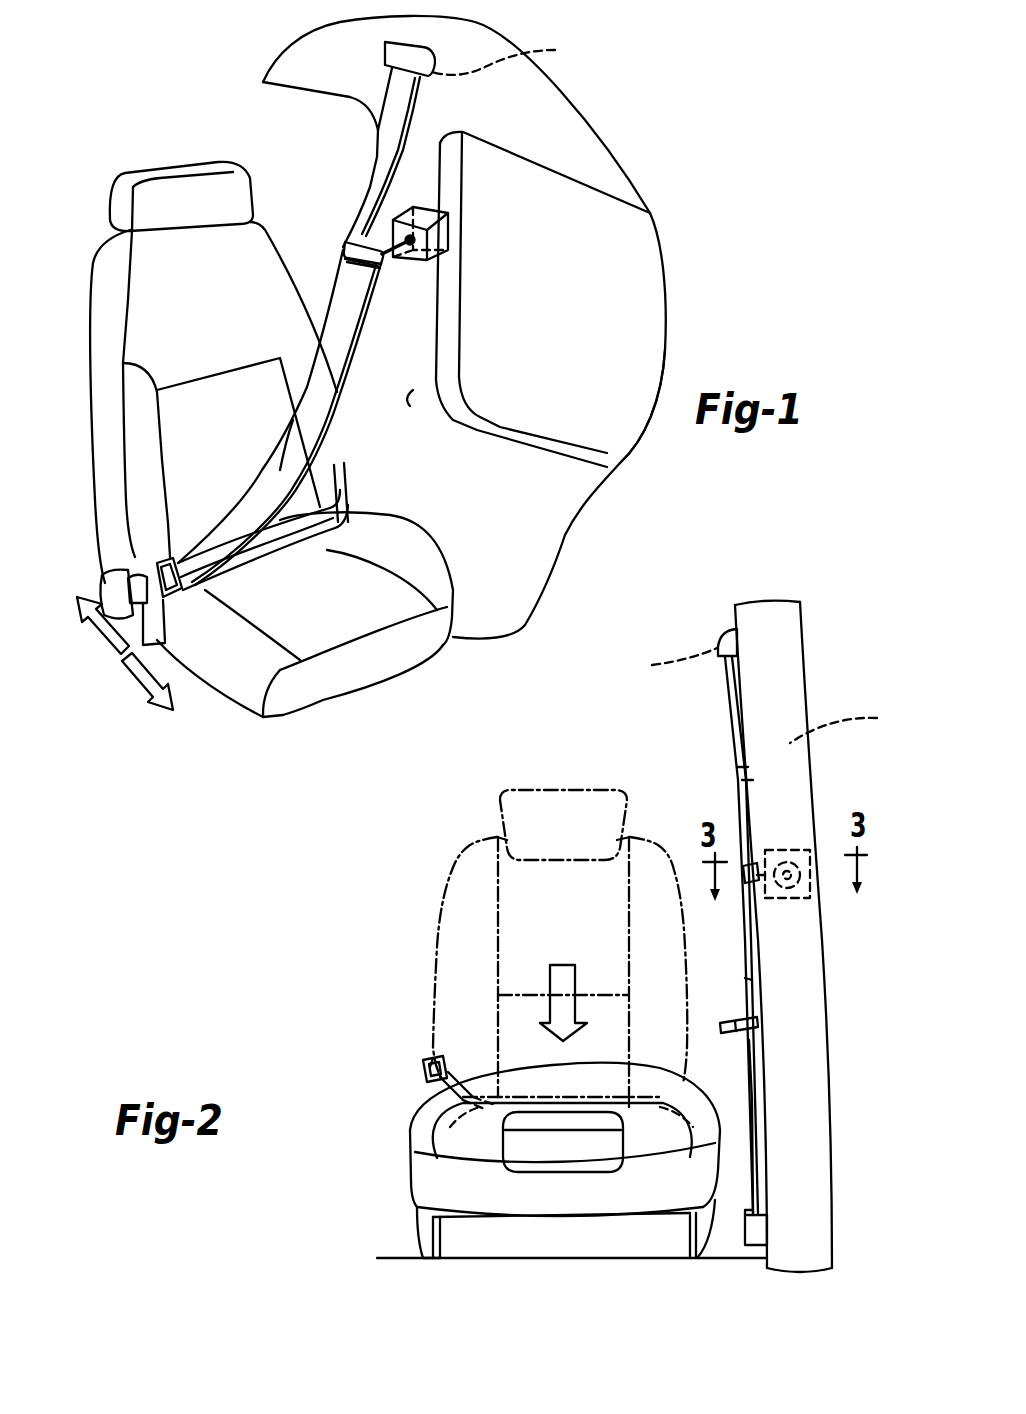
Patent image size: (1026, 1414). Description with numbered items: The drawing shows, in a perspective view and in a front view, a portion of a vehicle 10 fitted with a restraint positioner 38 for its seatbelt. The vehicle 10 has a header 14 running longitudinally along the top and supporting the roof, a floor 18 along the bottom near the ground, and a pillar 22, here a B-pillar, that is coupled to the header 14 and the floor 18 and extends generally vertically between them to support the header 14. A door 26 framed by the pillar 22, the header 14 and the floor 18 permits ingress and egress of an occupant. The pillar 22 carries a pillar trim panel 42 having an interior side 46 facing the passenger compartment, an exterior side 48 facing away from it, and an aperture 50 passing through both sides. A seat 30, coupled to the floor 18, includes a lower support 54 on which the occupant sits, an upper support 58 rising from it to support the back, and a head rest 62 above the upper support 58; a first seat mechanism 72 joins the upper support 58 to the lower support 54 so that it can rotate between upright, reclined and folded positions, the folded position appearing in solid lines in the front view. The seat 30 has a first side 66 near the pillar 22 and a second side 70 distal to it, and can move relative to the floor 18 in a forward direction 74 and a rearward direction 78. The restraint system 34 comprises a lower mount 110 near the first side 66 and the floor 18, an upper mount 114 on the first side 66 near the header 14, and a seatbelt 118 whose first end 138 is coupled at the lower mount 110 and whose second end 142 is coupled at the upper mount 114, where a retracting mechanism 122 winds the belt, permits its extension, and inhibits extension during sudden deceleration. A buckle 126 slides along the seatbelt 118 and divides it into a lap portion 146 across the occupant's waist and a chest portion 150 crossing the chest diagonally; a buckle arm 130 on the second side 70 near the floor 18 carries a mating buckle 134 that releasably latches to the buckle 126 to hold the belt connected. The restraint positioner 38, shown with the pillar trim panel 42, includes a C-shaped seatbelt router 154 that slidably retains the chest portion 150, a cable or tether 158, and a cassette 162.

In FIG. 1, the vehicle 10 is at (366, 127).
In FIG. 2, the vehicle 10 is at (475, 838).
In FIG. 1, the header 14 is at (434, 325).
In FIG. 2, the floor 18 is at (534, 1264).
In FIG. 1, the pillar 22 is at (521, 299).
In FIG. 2, the pillar 22 is at (799, 936).
In FIG. 1, the door 26 is at (614, 416).
In FIG. 1, the seat 30 is at (85, 406).
In FIG. 2, the seat 30 is at (536, 1135).
In FIG. 1, the restraint system 34 is at (293, 417).
In FIG. 2, the restraint system 34 is at (700, 959).
In FIG. 1, the restraint positioner 38 is at (336, 221).
In FIG. 2, the restraint positioner 38 is at (733, 921).
In FIG. 1, the pillar trim panel 42 is at (318, 306).
In FIG. 2, the pillar trim panel 42 is at (709, 751).
In FIG. 1, the interior side 46 is at (467, 389).
In FIG. 2, the interior side 46 is at (704, 797).
In FIG. 2, the exterior side 48 is at (845, 722).
In FIG. 1, the aperture 50 is at (369, 219).
In FIG. 1, the lower support 54 is at (387, 648).
In FIG. 2, the lower support 54 is at (523, 1173).
In FIG. 1, the upper support 58 is at (187, 389).
In FIG. 2, the upper support 58 is at (563, 982).
In FIG. 1, the head rest 62 is at (150, 196).
In FIG. 2, the head rest 62 is at (552, 998).
In FIG. 1, the first side 66 is at (387, 571).
In FIG. 2, the first side 66 is at (623, 1144).
In FIG. 1, the second side 70 is at (198, 700).
In FIG. 2, the second side 70 is at (512, 1220).
In FIG. 1, the first seat mechanism 72 is at (123, 549).
In FIG. 1, the forward direction 74 is at (124, 687).
In FIG. 1, the rearward direction 78 is at (78, 628).
In FIG. 2, the lower mount 110 is at (588, 1237).
In FIG. 1, the upper mount 114 is at (373, 62).
In FIG. 2, the upper mount 114 is at (678, 624).
In FIG. 1, the seatbelt 118 is at (263, 508).
In FIG. 2, the seatbelt 118 is at (815, 1070).
In FIG. 1, the retracting mechanism 122 is at (510, 55).
In FIG. 2, the retracting mechanism 122 is at (667, 662).
In FIG. 1, the buckle 126 is at (189, 607).
In FIG. 2, the buckle 126 is at (667, 1036).
In FIG. 1, the buckle arm 130 is at (85, 589).
In FIG. 2, the buckle arm 130 is at (407, 1072).
In FIG. 1, the mating buckle 134 is at (153, 558).
In FIG. 2, the mating buckle 134 is at (412, 1028).
In FIG. 2, the first end 138 is at (813, 1211).
In FIG. 1, the second end 142 is at (351, 157).
In FIG. 2, the second end 142 is at (682, 798).
In FIG. 1, the lap portion 146 is at (277, 562).
In FIG. 2, the lap portion 146 is at (816, 1155).
In FIG. 1, the chest portion 150 is at (254, 427).
In FIG. 2, the chest portion 150 is at (693, 967).
In FIG. 1, the seatbelt router 154 is at (313, 274).
In FIG. 2, the seatbelt router 154 is at (768, 835).
In FIG. 1, the tether 158 is at (452, 275).
In FIG. 1, the cassette 162 is at (469, 227).
In FIG. 2, the cassette 162 is at (835, 892).